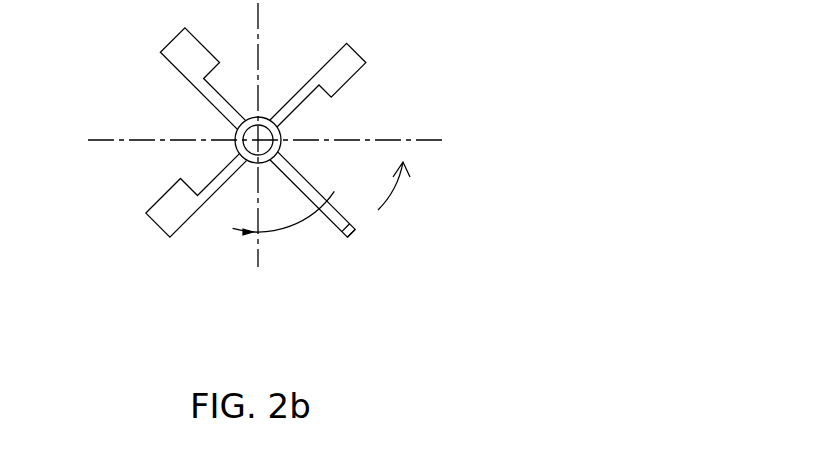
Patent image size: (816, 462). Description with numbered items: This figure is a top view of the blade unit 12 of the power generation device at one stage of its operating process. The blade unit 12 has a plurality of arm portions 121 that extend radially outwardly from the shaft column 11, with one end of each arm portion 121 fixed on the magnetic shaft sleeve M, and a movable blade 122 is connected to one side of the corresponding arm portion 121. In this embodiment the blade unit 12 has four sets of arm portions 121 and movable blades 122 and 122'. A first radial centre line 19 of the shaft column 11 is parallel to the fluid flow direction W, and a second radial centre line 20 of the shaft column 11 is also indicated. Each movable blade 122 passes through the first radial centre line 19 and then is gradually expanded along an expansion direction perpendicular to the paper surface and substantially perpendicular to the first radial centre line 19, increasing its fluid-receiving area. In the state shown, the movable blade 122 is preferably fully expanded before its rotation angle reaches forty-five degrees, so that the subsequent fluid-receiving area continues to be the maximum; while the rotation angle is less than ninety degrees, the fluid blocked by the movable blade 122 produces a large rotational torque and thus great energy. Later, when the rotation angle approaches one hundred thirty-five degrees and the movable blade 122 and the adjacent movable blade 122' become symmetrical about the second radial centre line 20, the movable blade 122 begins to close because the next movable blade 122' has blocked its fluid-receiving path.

The shaft column 11 is at (238, 90).
The blade unit 12 is at (237, 152).
The arm portion 121 is at (295, 178).
The movable blade 122 is at (379, 256).
The adjacent movable blade 122' is at (153, 196).
The first radial centre line 19 is at (260, 245).
The second radial centre line 20 is at (436, 139).
The magnetic shaft sleeve M is at (237, 133).
The fluid flow direction W is at (265, 297).